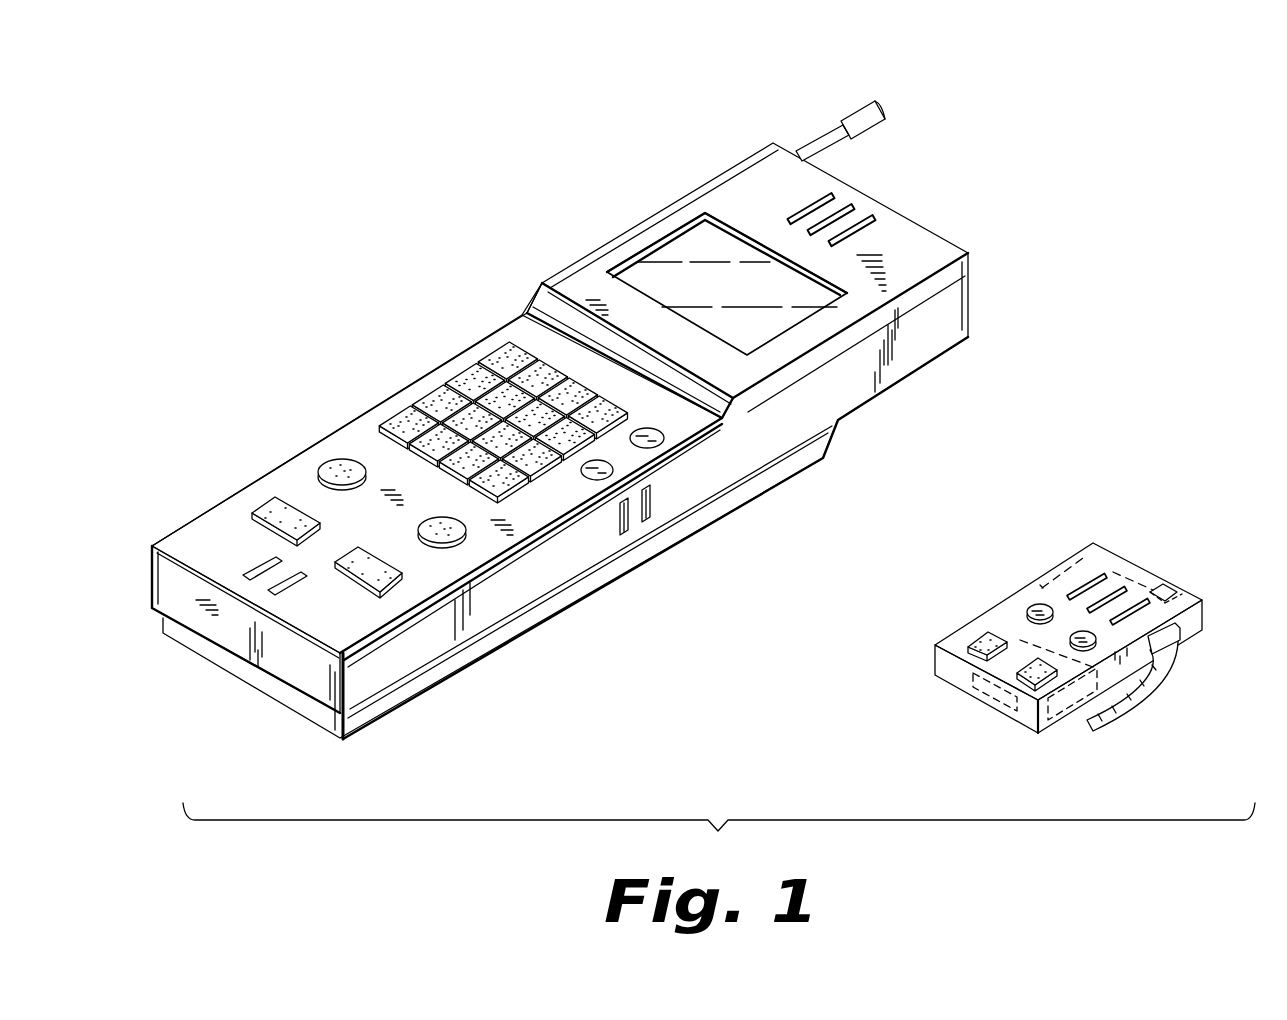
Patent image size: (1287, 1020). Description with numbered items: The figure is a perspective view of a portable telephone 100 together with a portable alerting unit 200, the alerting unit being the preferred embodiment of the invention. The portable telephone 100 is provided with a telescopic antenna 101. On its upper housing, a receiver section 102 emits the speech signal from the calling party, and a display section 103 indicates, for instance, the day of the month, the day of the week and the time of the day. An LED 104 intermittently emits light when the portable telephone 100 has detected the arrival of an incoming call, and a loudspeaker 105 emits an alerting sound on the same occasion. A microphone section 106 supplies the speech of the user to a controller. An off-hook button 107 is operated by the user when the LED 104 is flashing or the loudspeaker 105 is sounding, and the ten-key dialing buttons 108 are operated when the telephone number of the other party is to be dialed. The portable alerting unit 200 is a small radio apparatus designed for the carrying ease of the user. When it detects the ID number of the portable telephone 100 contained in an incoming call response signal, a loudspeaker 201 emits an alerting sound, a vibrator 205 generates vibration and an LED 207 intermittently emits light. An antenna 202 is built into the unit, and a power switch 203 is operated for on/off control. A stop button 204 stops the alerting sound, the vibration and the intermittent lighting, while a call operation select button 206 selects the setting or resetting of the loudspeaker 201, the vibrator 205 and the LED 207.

The portable telephone 100 is at (514, 238).
The telescopic antenna 101 is at (810, 142).
The receiver section 102 is at (870, 198).
The display section 103 is at (655, 266).
The LED 104 is at (650, 431).
The loudspeaker 105 is at (610, 538).
The microphone section 106 is at (244, 558).
The off-hook button 107 is at (286, 502).
The 10-key buttons 108 is at (444, 376).
The portable alerting unit 200 is at (1062, 520).
The loudspeaker 201 is at (1118, 581).
The antenna 202 is at (1170, 572).
The power switch 203 is at (1181, 635).
The stop button 204 is at (1028, 690).
The vibrator 205 is at (992, 692).
The call operation select button 206 is at (975, 642).
The LED 207 is at (1035, 605).